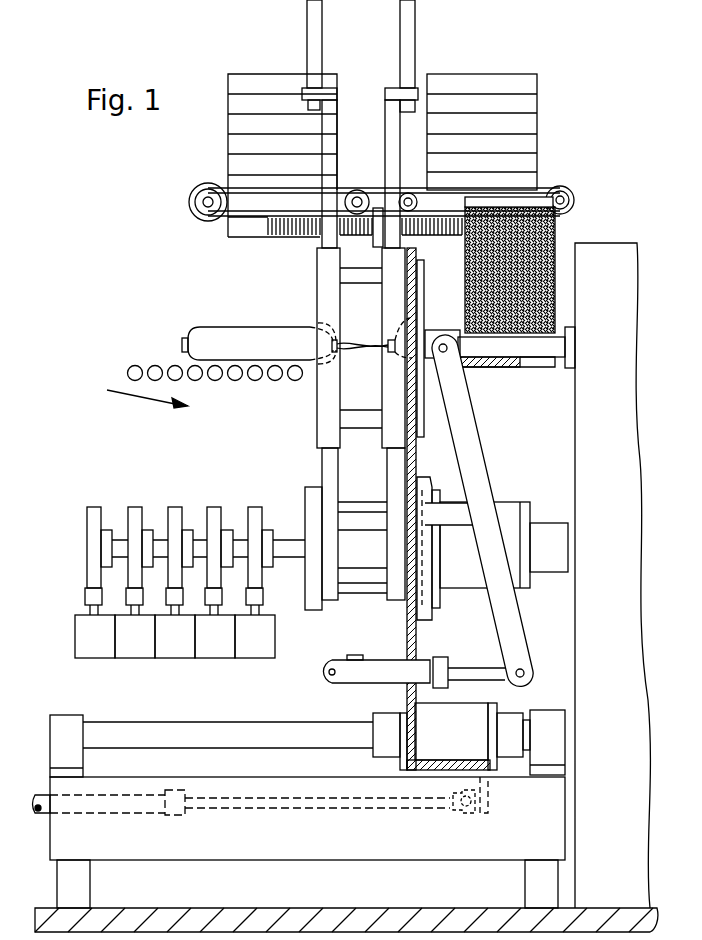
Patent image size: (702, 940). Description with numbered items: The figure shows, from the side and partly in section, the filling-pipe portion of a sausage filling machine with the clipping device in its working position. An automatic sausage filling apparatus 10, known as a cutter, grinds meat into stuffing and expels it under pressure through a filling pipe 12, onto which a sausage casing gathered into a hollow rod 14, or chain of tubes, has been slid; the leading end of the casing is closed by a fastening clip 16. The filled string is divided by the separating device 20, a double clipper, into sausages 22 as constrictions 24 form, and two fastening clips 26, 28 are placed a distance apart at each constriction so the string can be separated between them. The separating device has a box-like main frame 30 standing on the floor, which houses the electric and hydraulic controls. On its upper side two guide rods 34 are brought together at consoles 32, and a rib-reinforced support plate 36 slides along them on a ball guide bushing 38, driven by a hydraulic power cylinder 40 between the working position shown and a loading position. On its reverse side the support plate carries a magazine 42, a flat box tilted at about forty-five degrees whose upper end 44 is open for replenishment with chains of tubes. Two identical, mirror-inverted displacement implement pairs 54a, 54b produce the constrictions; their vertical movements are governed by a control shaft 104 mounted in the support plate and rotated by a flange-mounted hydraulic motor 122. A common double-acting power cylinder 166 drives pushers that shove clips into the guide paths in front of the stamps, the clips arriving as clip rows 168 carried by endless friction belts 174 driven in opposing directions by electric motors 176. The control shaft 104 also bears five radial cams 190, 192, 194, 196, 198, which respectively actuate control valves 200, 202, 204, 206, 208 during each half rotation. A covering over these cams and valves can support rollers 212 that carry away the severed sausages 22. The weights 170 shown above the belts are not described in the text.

The automatic sausage filling apparatus 10 is at (620, 243).
The filling pipe 12 is at (537, 357).
The hollow rod (chain of tubes) 14 is at (493, 368).
The fastening clip 16 is at (183, 347).
The separating device 20 is at (134, 396).
The sausages 22 is at (231, 328).
The constrictions 24 is at (366, 352).
The fastening clip 26 is at (320, 320).
The fastening clip 28 is at (402, 318).
The main frame 30 is at (424, 846).
The consoles 32 is at (68, 716).
The guide rods 34 is at (287, 724).
The support plate 36 is at (408, 630).
The ball guide bushing 38 is at (380, 716).
The hydraulic power cylinder 40 is at (107, 812).
The magazine 42 is at (553, 237).
The upper end of magazine 44 is at (548, 192).
The displacement implement pair 54a is at (392, 262).
The displacement implement pair 54b is at (330, 276).
The control shaft 104 is at (293, 540).
The hydraulic motor 122 is at (552, 533).
The double-acting power cylinder 166 is at (380, 205).
The clip rows 168 is at (268, 226).
The weight 170 is at (262, 80).
The endless friction belts 174 is at (356, 190).
The electric motors 176 is at (190, 200).
The radial cam 190 is at (94, 507).
The radial cam 192 is at (133, 507).
The radial cam 194 is at (176, 507).
The radial cam 196 is at (216, 507).
The radial cam 198 is at (255, 507).
The control valve 200 is at (95, 650).
The control valve 202 is at (135, 650).
The control valve 204 is at (175, 650).
The control valve 206 is at (212, 650).
The control valve 208 is at (255, 650).
The rollers 212 is at (130, 368).